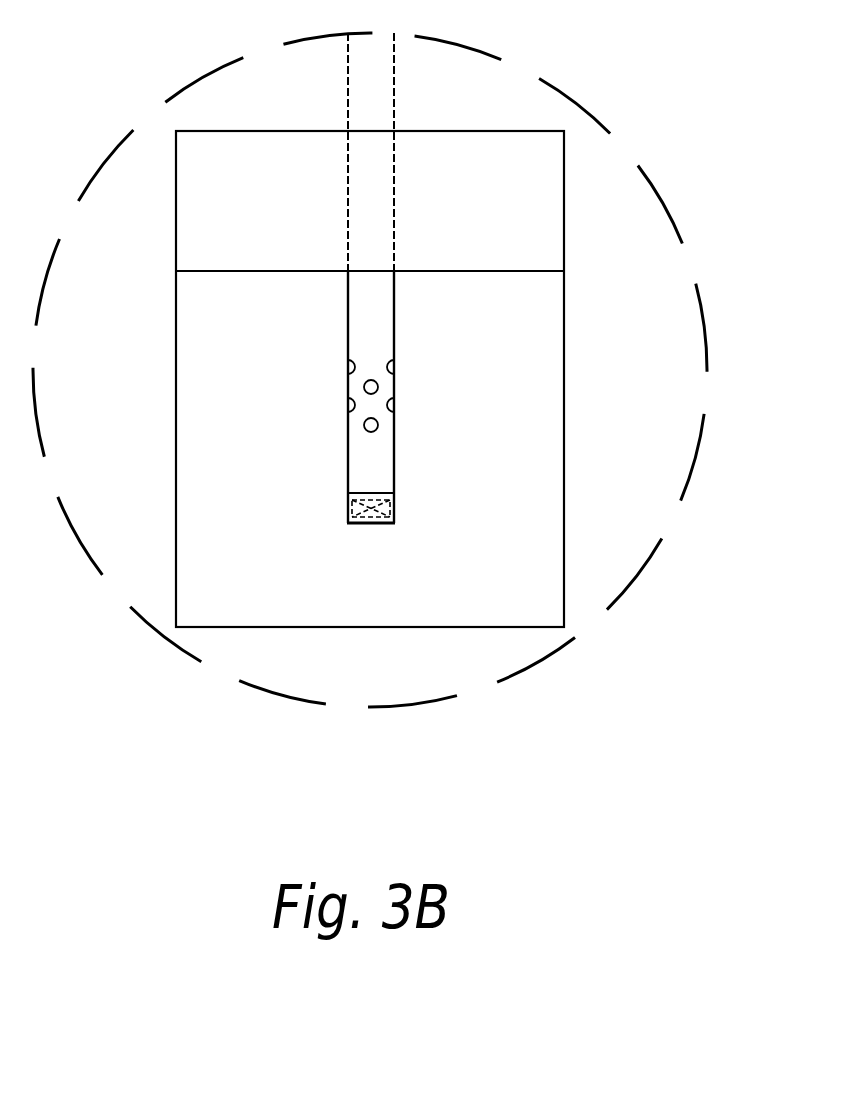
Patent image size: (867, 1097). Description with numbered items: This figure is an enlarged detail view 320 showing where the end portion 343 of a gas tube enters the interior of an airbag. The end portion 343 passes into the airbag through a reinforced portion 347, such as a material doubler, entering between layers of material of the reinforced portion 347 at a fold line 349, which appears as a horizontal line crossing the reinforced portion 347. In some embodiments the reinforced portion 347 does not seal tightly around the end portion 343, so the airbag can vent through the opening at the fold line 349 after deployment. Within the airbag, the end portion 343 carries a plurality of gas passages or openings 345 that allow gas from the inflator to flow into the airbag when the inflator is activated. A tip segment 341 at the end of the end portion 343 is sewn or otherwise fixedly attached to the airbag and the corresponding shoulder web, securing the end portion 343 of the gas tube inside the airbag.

The detail region of treatment system 320 is at (642, 388).
The tip segment 341 is at (372, 508).
The end portion 343 is at (386, 319).
The gas passages or openings 345 is at (348, 367).
The reinforced portion 347 is at (548, 231).
The fold line 349 is at (330, 272).